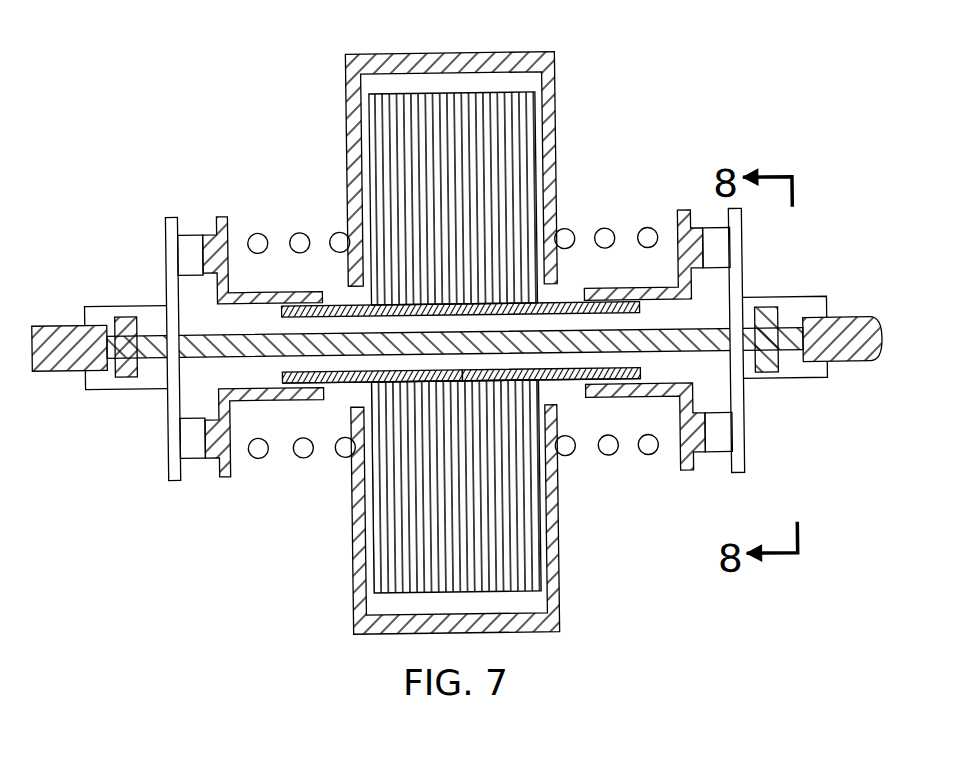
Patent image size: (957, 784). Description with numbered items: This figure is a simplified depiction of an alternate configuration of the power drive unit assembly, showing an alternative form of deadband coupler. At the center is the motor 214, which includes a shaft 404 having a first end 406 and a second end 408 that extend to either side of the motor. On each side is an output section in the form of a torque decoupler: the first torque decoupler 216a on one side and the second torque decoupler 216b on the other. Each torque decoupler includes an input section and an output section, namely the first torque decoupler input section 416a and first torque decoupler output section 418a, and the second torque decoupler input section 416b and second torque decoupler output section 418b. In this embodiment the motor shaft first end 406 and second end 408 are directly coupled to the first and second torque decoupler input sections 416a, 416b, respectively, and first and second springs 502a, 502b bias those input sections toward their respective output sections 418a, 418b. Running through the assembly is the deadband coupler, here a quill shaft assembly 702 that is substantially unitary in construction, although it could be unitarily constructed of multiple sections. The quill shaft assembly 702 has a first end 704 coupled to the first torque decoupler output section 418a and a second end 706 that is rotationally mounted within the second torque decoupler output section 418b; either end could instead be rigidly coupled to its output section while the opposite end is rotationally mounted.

The motor 214 is at (521, 93).
The first torque decoupler 216a is at (230, 328).
The second torque decoupler 216b is at (677, 317).
The shaft 404 is at (640, 311).
The first end 406 is at (282, 376).
The second end 408 is at (640, 376).
The first torque decoupler input section 416a is at (226, 474).
The second torque decoupler input section 416b is at (685, 473).
The first torque decoupler output section 418a is at (173, 477).
The second torque decoupler output section 418b is at (737, 476).
The first spring 502a is at (300, 230).
The second spring 502b is at (606, 229).
The quill shaft assembly 702 is at (345, 382).
The first end 704 is at (126, 312).
The second end 706 is at (767, 311).